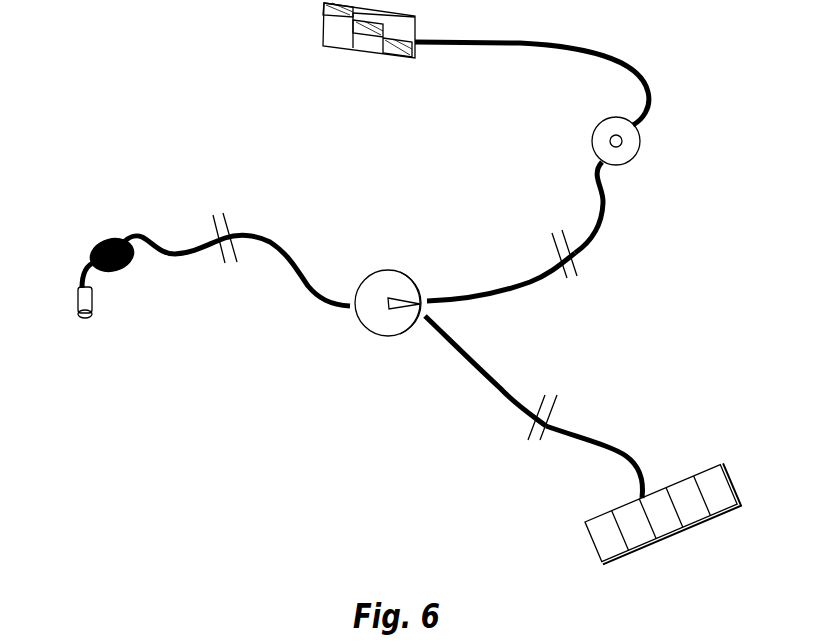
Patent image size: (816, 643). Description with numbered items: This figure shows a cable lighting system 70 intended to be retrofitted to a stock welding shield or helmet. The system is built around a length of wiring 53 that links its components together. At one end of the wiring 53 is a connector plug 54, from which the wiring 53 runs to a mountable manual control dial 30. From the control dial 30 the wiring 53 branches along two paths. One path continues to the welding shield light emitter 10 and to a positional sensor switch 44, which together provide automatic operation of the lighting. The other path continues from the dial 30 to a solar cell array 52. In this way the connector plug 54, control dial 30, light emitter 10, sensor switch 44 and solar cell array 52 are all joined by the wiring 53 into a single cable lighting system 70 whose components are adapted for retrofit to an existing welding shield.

The cable lighting system 70 is at (112, 83).
The positional sensor switch 44 is at (322, 22).
The welding shield light emitter 10 is at (640, 143).
The mountable manual control dial 30 is at (387, 270).
The wiring 53 is at (516, 286).
The connector plug 54 is at (85, 322).
The solar cell array 52 is at (590, 547).